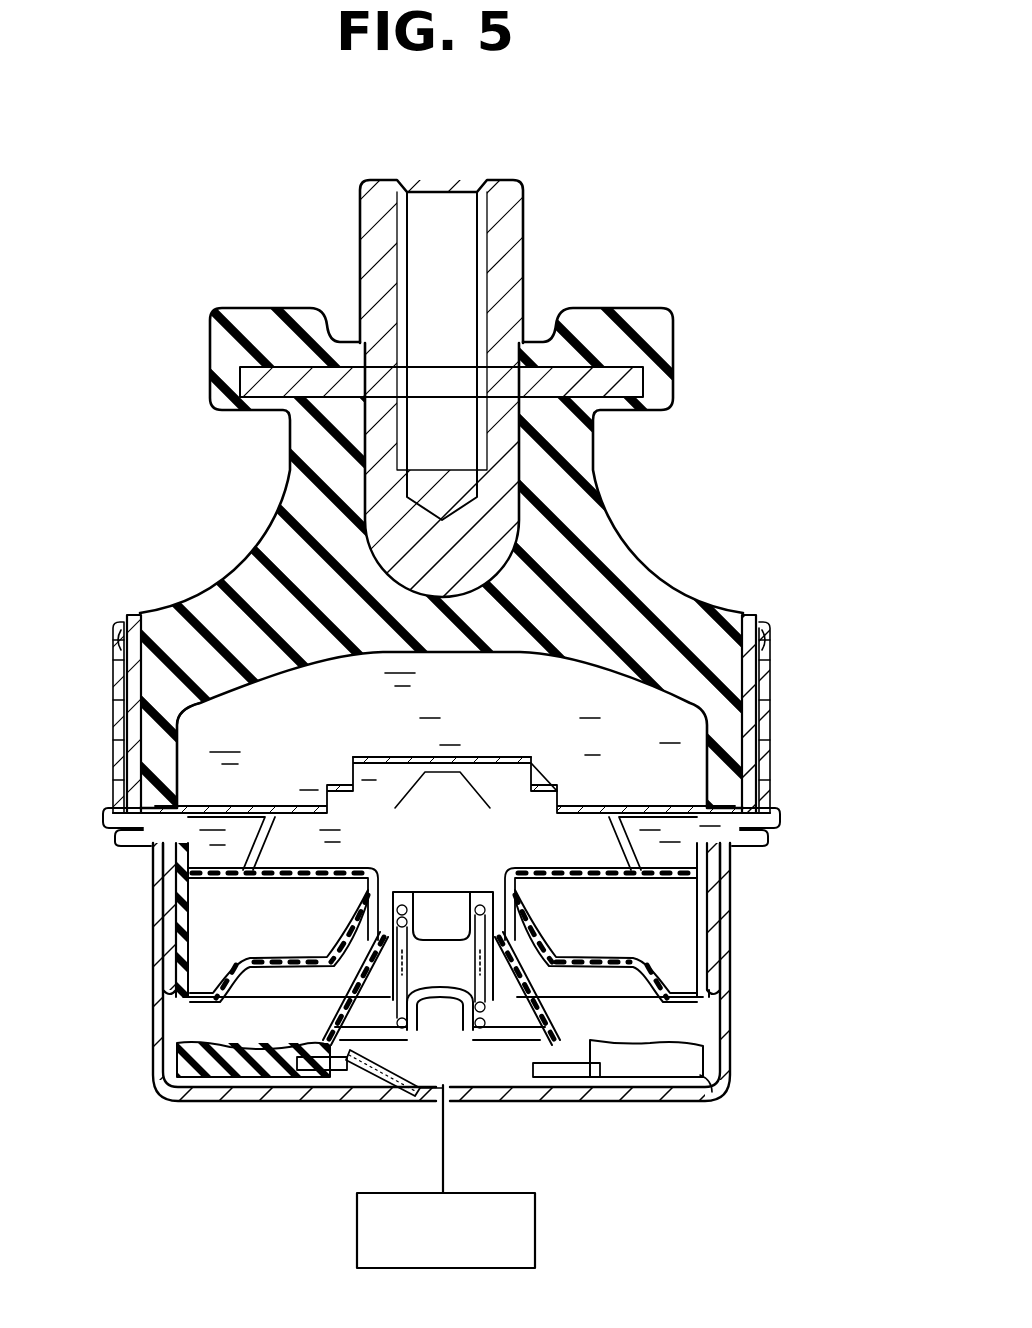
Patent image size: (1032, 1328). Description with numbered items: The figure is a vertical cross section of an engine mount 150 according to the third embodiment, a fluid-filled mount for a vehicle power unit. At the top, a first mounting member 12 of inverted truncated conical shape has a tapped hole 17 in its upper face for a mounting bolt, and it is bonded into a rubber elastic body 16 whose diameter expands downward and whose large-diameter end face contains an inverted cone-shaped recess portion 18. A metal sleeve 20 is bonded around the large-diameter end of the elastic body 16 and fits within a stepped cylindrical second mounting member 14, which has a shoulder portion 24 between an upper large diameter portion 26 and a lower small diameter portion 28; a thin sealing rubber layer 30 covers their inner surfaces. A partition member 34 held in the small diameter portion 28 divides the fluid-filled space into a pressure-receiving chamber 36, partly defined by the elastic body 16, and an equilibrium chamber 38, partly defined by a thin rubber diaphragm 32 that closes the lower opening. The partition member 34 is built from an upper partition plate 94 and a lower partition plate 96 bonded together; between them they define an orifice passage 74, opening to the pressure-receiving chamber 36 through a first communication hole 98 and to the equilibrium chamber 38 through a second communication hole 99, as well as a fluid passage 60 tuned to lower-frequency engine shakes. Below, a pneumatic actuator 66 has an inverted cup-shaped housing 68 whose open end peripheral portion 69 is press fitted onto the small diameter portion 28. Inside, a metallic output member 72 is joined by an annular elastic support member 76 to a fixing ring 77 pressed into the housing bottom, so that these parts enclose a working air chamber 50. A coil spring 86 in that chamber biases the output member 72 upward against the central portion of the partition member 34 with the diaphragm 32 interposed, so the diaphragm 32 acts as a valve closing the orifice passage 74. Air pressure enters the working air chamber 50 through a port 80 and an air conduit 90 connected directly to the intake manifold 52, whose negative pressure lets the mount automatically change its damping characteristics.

The engine mount 150 is at (805, 310).
The first mounting member 12 is at (512, 278).
The tapped hole 17 is at (452, 220).
The rubber elastic body 16 is at (628, 566).
The recess portion 18 is at (282, 696).
The second mounting member 14 is at (800, 715).
The metal sleeve 20 is at (745, 615).
The large diameter portion 26 is at (775, 670).
The sealing rubber layer 30 is at (770, 747).
The shoulder portion 24 is at (770, 820).
The open end peripheral portion 69 is at (740, 842).
The small diameter portion 28 is at (723, 933).
The housing 68 is at (728, 988).
The fixing ring 77 is at (718, 1085).
The pressure-receiving chamber 36 is at (541, 700).
The partition member 34 is at (203, 795).
The first communication hole 98 is at (335, 782).
The upper partition plate 94 is at (450, 760).
The lower partition plate 96 is at (590, 806).
The orifice passage 74 is at (388, 780).
The equilibrium chamber 38 is at (512, 852).
The second communication hole 99 is at (462, 805).
The fluid passage 60 is at (200, 858).
The diaphragm 32 is at (592, 955).
The coil spring 86 is at (483, 1030).
The elastic support member 76 is at (543, 1085).
The pneumatic actuator 66 is at (208, 1037).
The output member 72 is at (582, 1085).
The port 80 is at (397, 1087).
The working air chamber 50 is at (320, 1082).
The air conduit 90 is at (443, 1163).
The intake manifold 52 is at (525, 1197).